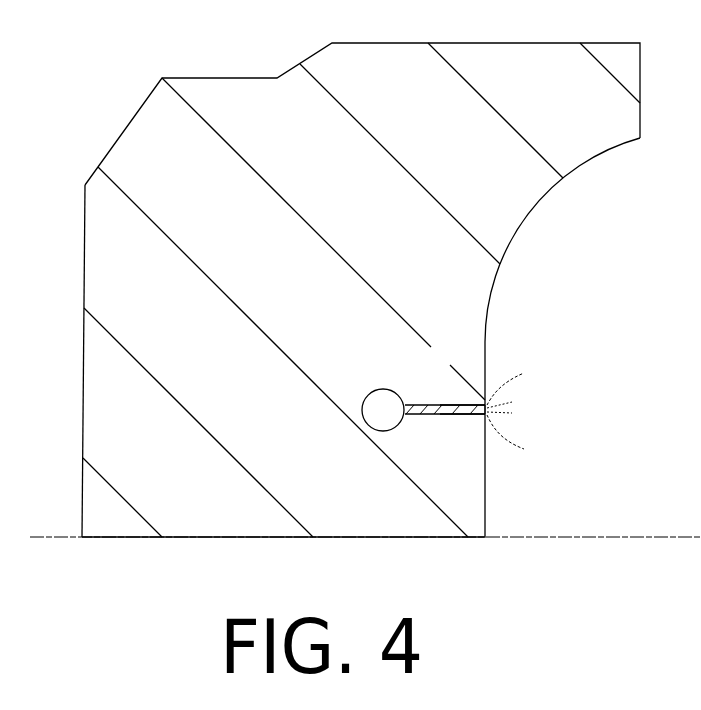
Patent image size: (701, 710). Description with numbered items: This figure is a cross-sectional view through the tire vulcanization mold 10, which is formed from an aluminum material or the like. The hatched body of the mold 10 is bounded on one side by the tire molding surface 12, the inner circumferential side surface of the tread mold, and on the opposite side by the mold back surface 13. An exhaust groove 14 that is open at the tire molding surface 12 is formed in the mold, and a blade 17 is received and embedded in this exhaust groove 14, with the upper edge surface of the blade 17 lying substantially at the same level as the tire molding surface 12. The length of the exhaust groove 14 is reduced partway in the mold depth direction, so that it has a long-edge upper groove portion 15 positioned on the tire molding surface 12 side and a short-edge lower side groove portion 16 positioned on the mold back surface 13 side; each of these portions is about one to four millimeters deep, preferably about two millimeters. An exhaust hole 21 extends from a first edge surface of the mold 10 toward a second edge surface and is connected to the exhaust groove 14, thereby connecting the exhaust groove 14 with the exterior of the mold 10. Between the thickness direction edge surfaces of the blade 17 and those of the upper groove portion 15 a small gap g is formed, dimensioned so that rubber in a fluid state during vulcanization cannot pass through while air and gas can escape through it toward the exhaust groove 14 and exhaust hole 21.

The tire vulcanization mold 10 is at (104, 131).
The tire molding surface 12 is at (517, 233).
The mold back surface 13 is at (83, 236).
The exhaust groove 14 is at (487, 410).
The upper groove portion 15 is at (483, 400).
The lower side groove portion 16 is at (428, 403).
The blade 17 is at (446, 416).
The exhaust hole 21 is at (373, 398).
The small gap g is at (512, 410).